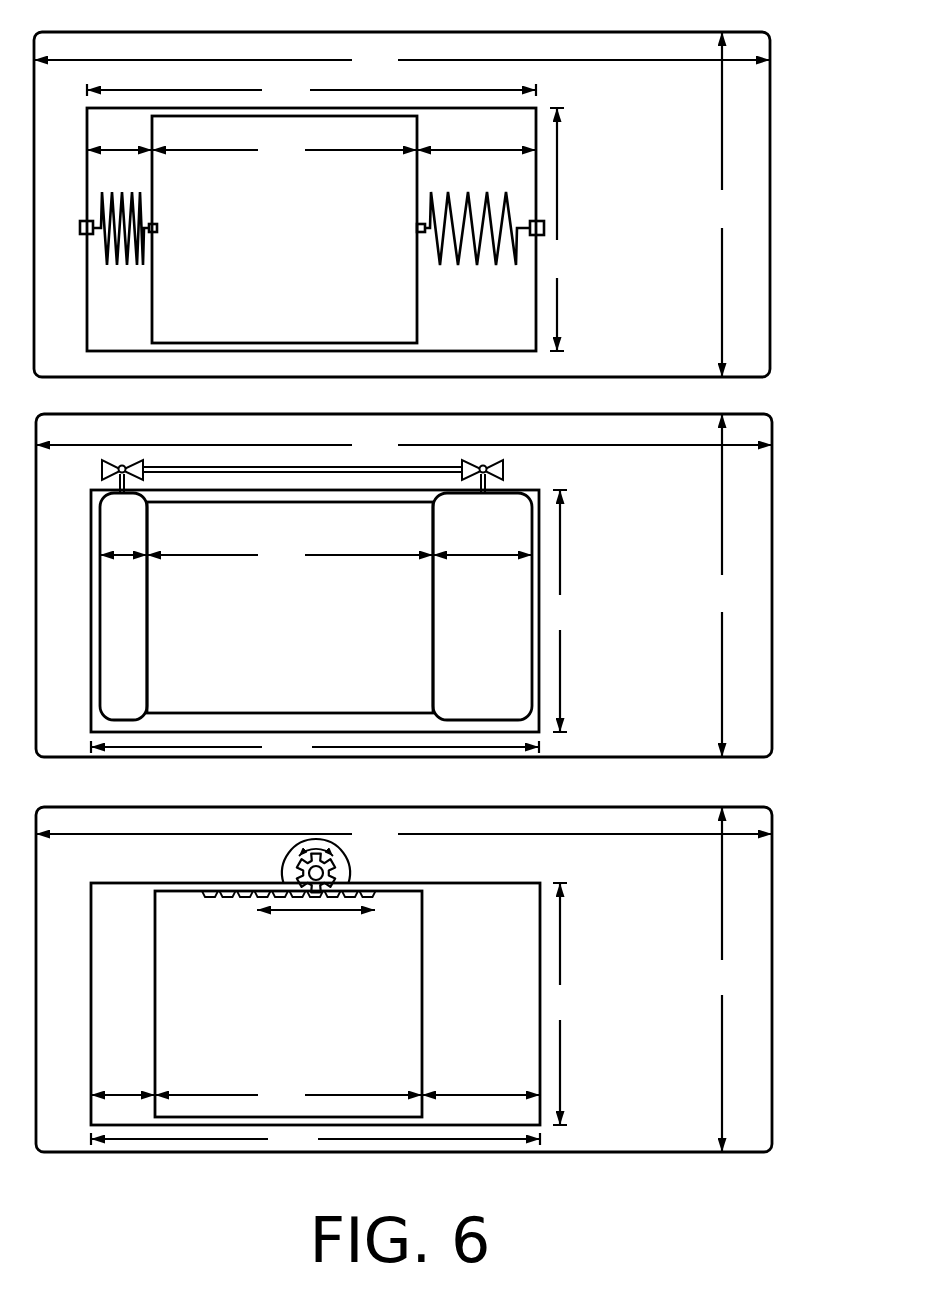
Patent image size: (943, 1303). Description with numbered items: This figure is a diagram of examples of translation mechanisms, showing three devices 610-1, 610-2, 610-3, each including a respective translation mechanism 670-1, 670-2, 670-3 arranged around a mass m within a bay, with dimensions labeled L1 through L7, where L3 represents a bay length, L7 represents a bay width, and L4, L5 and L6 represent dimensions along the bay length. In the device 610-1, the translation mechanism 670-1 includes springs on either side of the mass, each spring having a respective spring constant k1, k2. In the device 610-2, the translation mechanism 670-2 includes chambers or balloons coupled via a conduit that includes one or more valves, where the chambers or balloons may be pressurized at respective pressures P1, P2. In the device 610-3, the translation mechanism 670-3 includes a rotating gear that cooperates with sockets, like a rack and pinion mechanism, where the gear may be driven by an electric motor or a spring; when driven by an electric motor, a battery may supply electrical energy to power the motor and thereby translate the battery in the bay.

The device 610-1 is at (547, 32).
The translation mechanism 670-1 is at (584, 169).
The device 610-2 is at (563, 414).
The translation mechanism 670-2 is at (534, 474).
The device 610-3 is at (562, 807).
The translation mechanism 670-3 is at (406, 864).